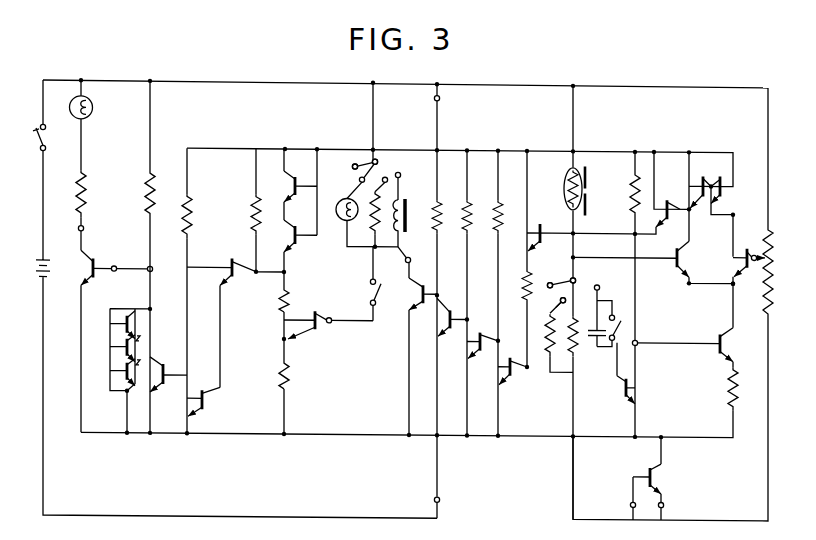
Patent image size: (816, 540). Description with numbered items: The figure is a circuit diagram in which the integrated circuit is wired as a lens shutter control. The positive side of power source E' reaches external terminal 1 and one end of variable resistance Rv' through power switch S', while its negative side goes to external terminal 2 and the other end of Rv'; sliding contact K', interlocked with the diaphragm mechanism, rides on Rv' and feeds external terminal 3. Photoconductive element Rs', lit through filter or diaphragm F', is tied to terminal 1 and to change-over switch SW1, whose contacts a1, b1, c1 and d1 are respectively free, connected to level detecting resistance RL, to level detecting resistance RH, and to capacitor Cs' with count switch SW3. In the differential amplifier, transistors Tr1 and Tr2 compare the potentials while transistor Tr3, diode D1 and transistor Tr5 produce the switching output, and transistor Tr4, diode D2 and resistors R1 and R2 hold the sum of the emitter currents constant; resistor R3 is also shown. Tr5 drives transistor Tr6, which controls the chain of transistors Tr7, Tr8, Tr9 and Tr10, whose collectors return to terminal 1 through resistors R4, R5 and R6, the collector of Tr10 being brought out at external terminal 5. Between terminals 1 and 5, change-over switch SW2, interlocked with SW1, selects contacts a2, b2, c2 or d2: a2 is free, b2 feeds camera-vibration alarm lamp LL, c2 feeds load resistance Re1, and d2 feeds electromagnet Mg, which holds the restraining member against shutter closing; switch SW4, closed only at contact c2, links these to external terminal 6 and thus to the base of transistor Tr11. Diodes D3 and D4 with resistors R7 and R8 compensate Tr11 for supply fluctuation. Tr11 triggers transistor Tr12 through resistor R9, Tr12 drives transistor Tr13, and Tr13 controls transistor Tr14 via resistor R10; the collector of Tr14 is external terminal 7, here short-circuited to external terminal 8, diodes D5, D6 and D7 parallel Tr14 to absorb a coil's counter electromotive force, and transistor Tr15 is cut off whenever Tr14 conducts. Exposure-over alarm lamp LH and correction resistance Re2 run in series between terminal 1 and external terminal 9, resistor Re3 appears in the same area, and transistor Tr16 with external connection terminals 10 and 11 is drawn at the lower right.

The exposure over alarm lamp LH is at (90, 110).
The power switch S' is at (49, 137).
The correction resistance Re2 is at (83, 196).
The resistor Re3 is at (153, 181).
The external terminal 9 is at (78, 228).
The transistor Tr15 is at (104, 254).
The external terminal 7 is at (141, 273).
The external terminal 8 is at (114, 271).
The power source E' is at (50, 280).
The diode D5 is at (112, 323).
The diode D6 is at (113, 347).
The diode D7 is at (113, 372).
The transistor Tr14 is at (165, 383).
The transistor Tr13 is at (205, 405).
The resistor R10 is at (190, 231).
The resistor R9 is at (254, 216).
The transistor Tr12 is at (233, 279).
The resistor R7 is at (280, 318).
The resistor R8 is at (280, 372).
The diode D3 is at (299, 187).
The diode D4 is at (299, 245).
The change-over switch SW2 is at (362, 156).
The change-over contact a2 is at (353, 165).
The change-over contact b2 is at (385, 167).
The change-over contact c2 is at (382, 191).
The change-over contact d2 is at (401, 173).
The alarm lamp LL is at (338, 216).
The load resistance Re1 is at (367, 233).
The external terminal 5 is at (405, 257).
The electromagnet Mg is at (407, 222).
The switch SW4 is at (372, 289).
The transistor Tr10 is at (410, 306).
The external terminal 6 is at (329, 321).
The transistor Tr11 is at (310, 331).
The external terminal 1 is at (440, 96).
The external terminal 2 is at (443, 501).
The resistor R6 is at (443, 208).
The resistor R5 is at (473, 202).
The resistor R4 is at (504, 208).
The transistor Tr9 is at (444, 314).
The transistor Tr8 is at (482, 349).
The transistor Tr7 is at (512, 379).
The level detecting resistance RL is at (544, 359).
The level detecting resistance RH is at (568, 366).
The resistor R3 is at (523, 300).
The photoconductive element Rs' is at (557, 184).
The filter or diaphragm F' is at (594, 187).
The transistor Tr6 is at (548, 214).
The resistor R2 is at (630, 201).
The transistor Tr5 is at (668, 198).
The transistor Tr3 is at (703, 169).
The diode D1 is at (725, 181).
The sliding contact K' is at (756, 243).
The transistor Tr1 is at (733, 256).
The transistor Tr2 is at (674, 261).
The external terminal 3 is at (735, 278).
The variable resistance Rv' is at (755, 276).
The change-over switch SW1 is at (562, 276).
The change-over contact a1 is at (545, 280).
The change-over contact b1 is at (560, 297).
The change-over contact c1 is at (581, 275).
The change-over contact d1 is at (606, 304).
The count switch SW3 is at (624, 318).
The transistor Tr4 is at (718, 334).
The capacitor Cs' is at (592, 367).
The diode D2 is at (629, 384).
The resistor R1 is at (727, 392).
The transistor Tr16 is at (644, 468).
The external connection terminal 10 is at (630, 500).
The external connection terminal 11 is at (663, 503).